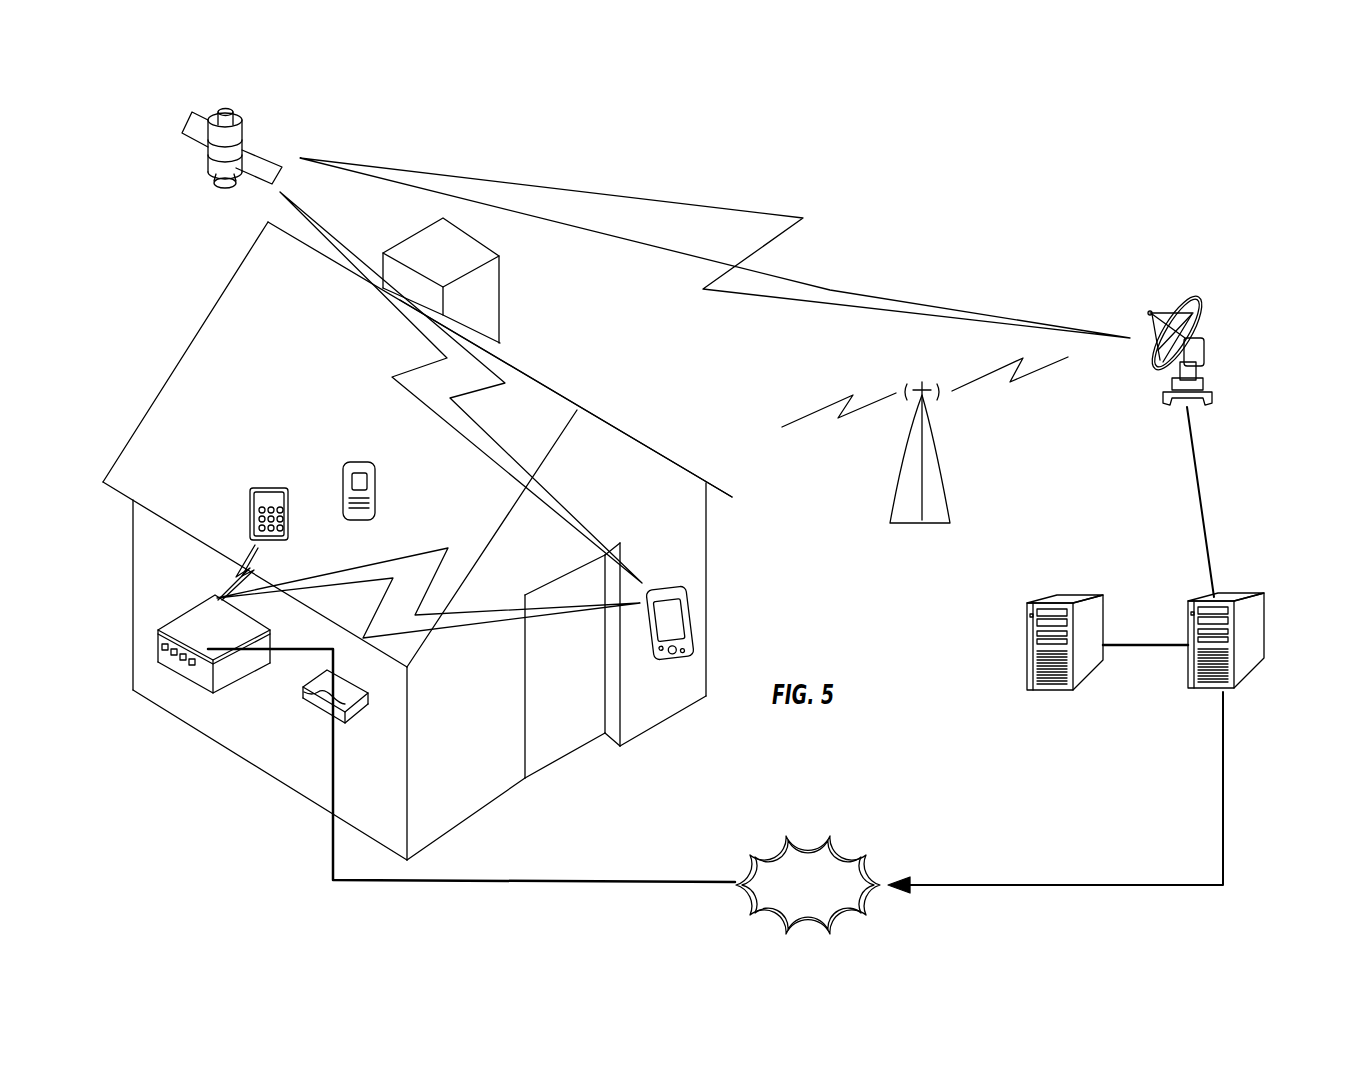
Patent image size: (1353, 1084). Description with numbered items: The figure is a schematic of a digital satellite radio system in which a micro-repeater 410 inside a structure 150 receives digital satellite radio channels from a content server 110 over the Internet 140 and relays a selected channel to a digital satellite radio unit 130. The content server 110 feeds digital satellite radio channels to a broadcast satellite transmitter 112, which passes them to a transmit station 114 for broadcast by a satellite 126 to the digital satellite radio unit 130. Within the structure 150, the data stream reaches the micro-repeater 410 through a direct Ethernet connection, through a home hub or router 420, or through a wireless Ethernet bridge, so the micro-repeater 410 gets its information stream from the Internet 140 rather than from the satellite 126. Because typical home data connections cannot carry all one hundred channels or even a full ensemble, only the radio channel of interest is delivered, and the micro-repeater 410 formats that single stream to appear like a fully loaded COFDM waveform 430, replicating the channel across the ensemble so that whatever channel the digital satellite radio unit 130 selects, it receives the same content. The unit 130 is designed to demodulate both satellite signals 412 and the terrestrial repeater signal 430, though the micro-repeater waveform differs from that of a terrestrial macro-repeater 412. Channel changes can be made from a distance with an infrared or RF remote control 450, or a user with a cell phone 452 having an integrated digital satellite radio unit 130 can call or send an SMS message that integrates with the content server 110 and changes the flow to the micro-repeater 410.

The satellite 126 is at (247, 129).
The structure 150 is at (219, 298).
The terrestrial macro-repeater 412 is at (461, 340).
The transmit station 114 is at (1200, 310).
The digital satellite radio unit 130 is at (676, 581).
The remote control 450 is at (272, 487).
The cell phone 452 is at (376, 492).
The COFDM waveform 430 is at (367, 562).
The micro-repeater 410 is at (180, 673).
The home hub or router 420 is at (318, 707).
The content server 110 is at (1027, 640).
The broadcast satellite transmitter 112 is at (1265, 630).
The Internet 140 is at (886, 852).